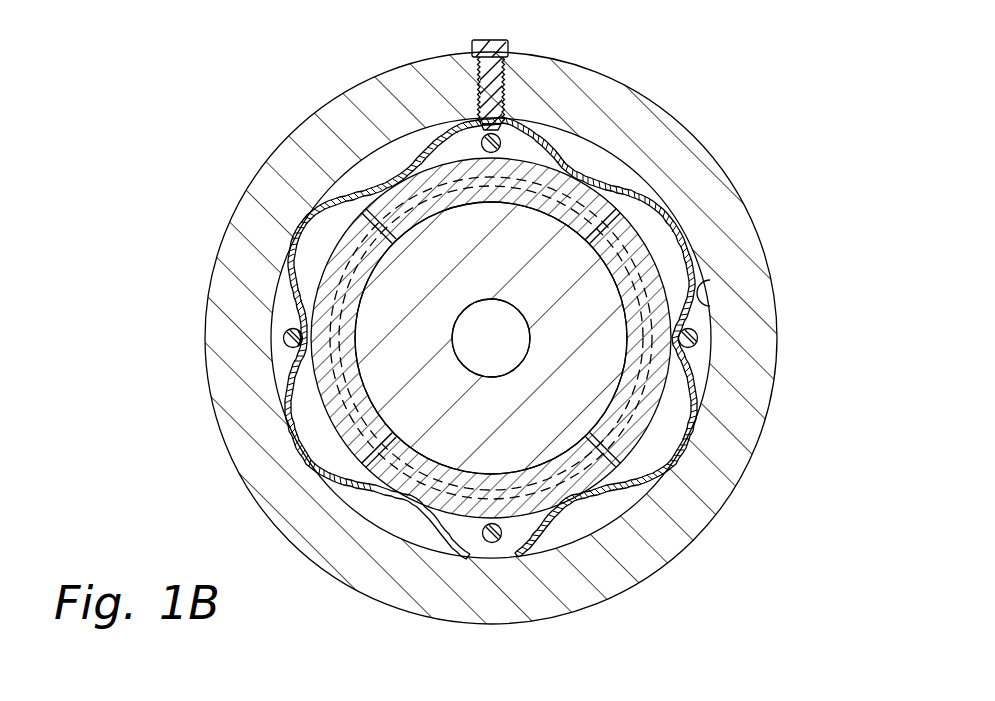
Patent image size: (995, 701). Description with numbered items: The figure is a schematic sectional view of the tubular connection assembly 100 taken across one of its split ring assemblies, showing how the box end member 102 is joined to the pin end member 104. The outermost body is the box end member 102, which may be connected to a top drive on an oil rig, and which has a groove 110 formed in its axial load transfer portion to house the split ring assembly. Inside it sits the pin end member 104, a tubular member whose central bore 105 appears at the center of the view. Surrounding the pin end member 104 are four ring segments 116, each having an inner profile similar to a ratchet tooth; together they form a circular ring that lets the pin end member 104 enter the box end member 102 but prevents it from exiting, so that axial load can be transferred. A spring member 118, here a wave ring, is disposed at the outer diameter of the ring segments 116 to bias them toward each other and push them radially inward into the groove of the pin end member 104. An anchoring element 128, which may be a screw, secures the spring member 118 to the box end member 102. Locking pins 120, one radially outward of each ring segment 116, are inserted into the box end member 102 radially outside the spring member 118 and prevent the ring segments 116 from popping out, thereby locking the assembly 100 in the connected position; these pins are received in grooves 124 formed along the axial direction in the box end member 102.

The tubular connection assembly 100 is at (219, 102).
The box end member 102 is at (700, 162).
The pin end member 104 is at (600, 355).
The central bore 105 is at (474, 351).
The groove 110 is at (712, 280).
The ring segments 116 is at (377, 182).
The spring member 118 is at (325, 300).
The locking pins 120 is at (503, 143).
The grooves 124 is at (483, 128).
The anchoring element 128 is at (493, 42).